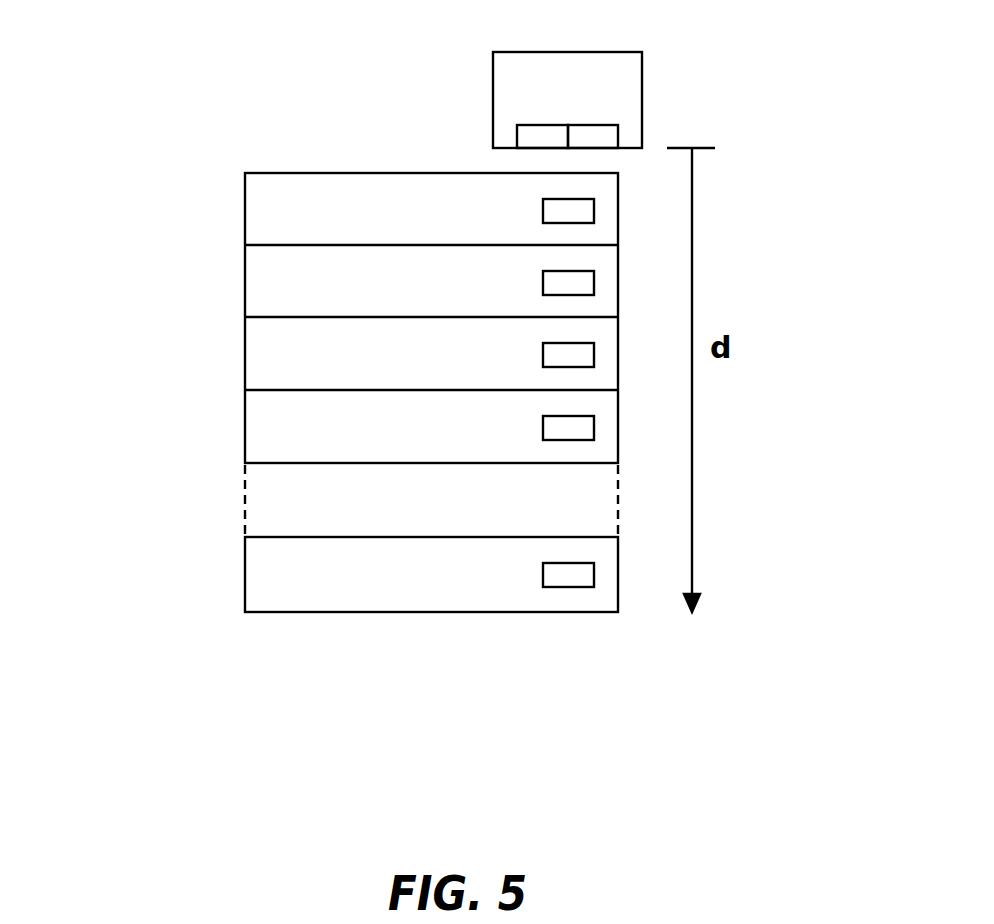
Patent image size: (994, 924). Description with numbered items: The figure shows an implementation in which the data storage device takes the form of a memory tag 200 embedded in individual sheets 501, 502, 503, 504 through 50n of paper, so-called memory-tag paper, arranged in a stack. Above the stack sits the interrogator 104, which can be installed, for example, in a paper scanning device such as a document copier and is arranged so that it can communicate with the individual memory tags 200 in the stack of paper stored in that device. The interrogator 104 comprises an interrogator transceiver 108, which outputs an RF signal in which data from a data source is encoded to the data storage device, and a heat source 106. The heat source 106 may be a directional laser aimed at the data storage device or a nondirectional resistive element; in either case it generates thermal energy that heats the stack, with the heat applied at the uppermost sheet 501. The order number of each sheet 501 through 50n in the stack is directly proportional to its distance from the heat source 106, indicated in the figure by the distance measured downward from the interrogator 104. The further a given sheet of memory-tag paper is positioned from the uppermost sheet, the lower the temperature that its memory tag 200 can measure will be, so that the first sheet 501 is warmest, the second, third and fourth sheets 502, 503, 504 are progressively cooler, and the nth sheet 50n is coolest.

The interrogator 104 is at (650, 69).
The heat source 106 is at (512, 135).
The interrogator transceiver 108 is at (623, 135).
The sheet 501 is at (232, 207).
The sheet 502 is at (232, 288).
The sheet 503 is at (232, 362).
The sheet 504 is at (232, 435).
The sheet 50n is at (232, 580).
The memory tag 200 is at (538, 212).